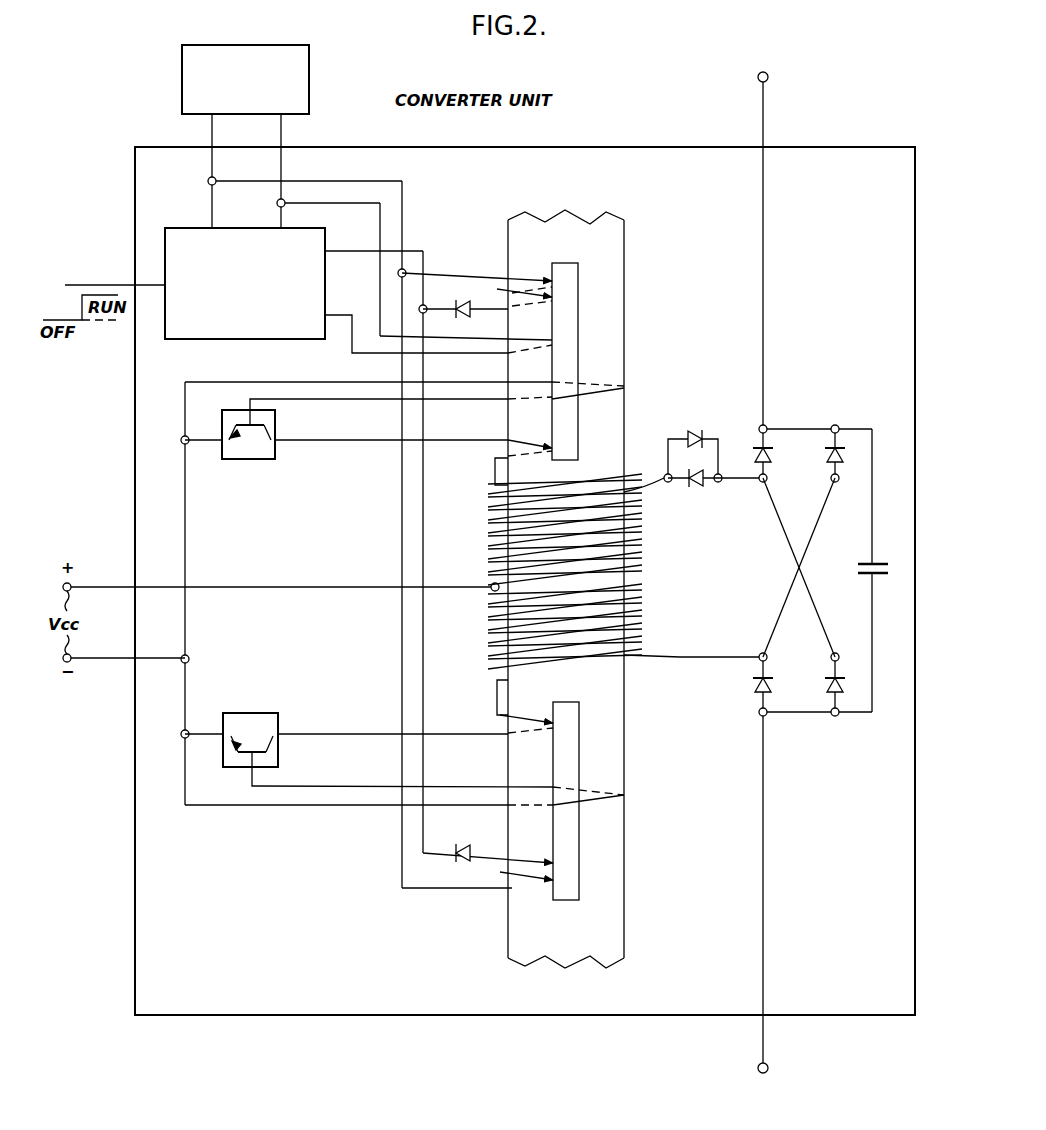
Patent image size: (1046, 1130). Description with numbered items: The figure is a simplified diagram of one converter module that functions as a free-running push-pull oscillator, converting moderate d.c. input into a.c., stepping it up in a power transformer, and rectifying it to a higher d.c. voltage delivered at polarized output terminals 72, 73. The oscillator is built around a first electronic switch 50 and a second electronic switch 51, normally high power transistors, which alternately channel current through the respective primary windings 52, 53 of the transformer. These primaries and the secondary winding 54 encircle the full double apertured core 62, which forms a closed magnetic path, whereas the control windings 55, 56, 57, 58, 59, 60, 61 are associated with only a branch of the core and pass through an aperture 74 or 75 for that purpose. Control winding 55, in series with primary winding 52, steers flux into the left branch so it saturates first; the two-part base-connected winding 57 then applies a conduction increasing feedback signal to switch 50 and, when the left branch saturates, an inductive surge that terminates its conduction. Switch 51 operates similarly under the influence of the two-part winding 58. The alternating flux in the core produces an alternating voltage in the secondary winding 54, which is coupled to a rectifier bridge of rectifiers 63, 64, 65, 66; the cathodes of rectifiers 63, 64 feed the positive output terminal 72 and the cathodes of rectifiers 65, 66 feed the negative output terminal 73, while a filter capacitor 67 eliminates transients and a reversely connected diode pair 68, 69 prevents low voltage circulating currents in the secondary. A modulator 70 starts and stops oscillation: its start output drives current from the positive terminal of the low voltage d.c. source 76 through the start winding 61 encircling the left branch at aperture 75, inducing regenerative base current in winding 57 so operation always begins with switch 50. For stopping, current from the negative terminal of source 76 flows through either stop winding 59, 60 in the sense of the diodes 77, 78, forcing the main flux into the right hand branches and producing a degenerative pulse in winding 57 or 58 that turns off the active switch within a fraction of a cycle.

The first electronic switch 50 is at (275, 452).
The second electronic switch 51 is at (278, 716).
The primary winding 52 is at (490, 511).
The primary winding 53 is at (492, 659).
The secondary winding 54 is at (642, 553).
The control winding 55 is at (413, 433).
The control winding 56 is at (511, 710).
The winding 57 is at (624, 388).
The winding 58 is at (624, 795).
The stop winding 59 is at (522, 272).
The stop winding 60 is at (520, 879).
The start winding 61 is at (552, 340).
The double apertured core 62 is at (626, 887).
The rectifier 63 is at (770, 453).
The rectifier 64 is at (842, 455).
The rectifier 65 is at (770, 683).
The rectifier 66 is at (830, 675).
The filter capacitor 67 is at (856, 570).
The diode 68 is at (694, 438).
The diode 69 is at (694, 488).
The modulator 70 is at (186, 228).
The positive output terminal 72 is at (768, 78).
The negative output terminal 73 is at (768, 1068).
The aperture 74 is at (572, 827).
The aperture 75 is at (568, 310).
The low voltage d.c. source 76 is at (184, 77).
The diode 77 is at (462, 318).
The diode 78 is at (462, 844).